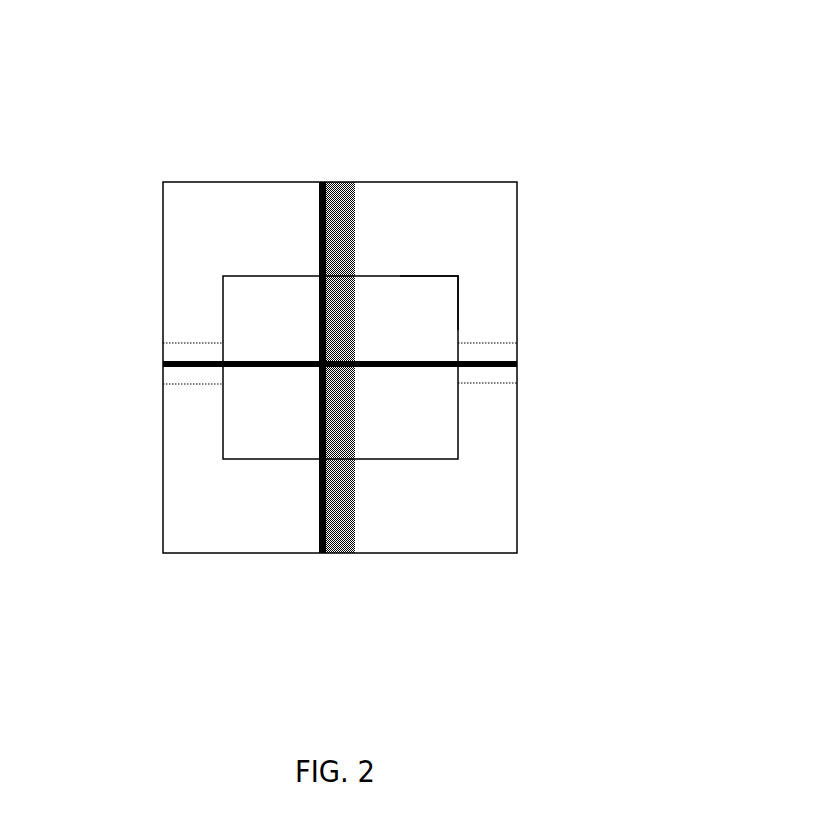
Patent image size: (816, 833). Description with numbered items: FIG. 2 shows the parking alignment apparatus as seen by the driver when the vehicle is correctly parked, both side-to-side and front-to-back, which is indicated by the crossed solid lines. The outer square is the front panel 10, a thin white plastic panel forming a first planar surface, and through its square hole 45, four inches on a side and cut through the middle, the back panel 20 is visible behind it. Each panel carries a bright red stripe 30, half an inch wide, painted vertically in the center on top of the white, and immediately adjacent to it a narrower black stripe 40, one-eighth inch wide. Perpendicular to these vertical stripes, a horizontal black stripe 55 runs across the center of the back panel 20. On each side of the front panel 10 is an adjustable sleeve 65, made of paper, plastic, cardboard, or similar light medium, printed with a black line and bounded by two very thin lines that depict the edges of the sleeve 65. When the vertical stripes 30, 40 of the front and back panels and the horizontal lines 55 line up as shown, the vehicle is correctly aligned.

The front panel 10 is at (417, 210).
The back panel 20 is at (418, 415).
The red stripe 30 is at (342, 205).
The black stripe 40 is at (320, 237).
The square hole 45 is at (456, 306).
The horizontal black stripe 55 is at (273, 362).
The adjustable sleeve 65 is at (530, 348).